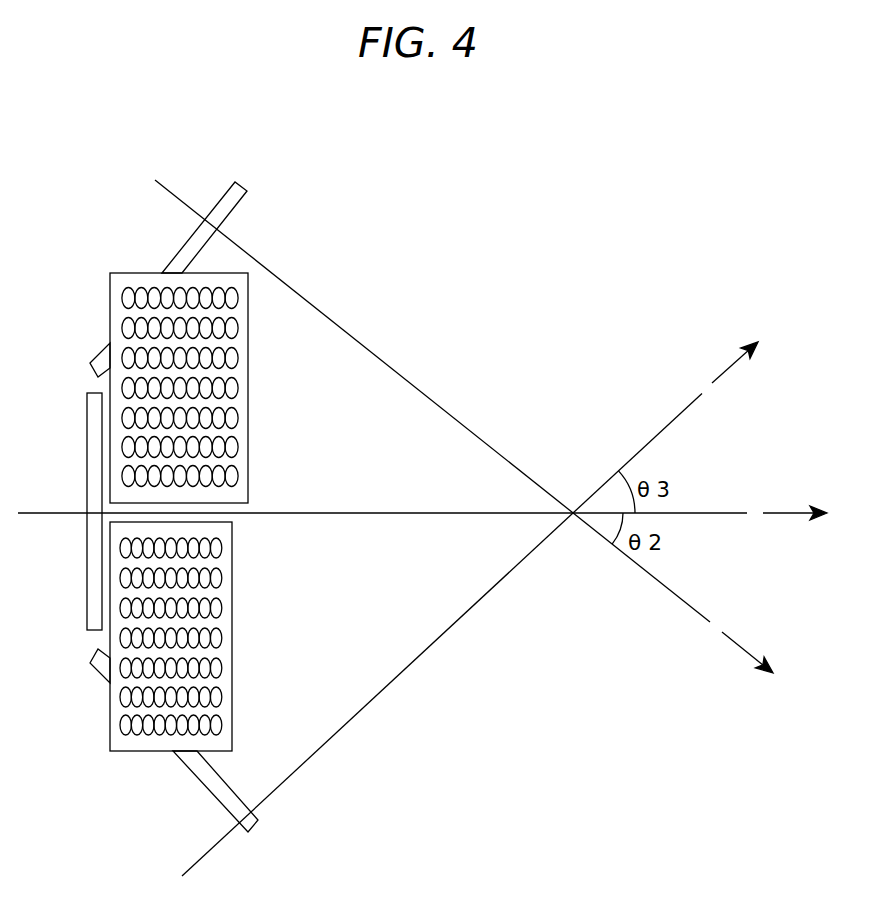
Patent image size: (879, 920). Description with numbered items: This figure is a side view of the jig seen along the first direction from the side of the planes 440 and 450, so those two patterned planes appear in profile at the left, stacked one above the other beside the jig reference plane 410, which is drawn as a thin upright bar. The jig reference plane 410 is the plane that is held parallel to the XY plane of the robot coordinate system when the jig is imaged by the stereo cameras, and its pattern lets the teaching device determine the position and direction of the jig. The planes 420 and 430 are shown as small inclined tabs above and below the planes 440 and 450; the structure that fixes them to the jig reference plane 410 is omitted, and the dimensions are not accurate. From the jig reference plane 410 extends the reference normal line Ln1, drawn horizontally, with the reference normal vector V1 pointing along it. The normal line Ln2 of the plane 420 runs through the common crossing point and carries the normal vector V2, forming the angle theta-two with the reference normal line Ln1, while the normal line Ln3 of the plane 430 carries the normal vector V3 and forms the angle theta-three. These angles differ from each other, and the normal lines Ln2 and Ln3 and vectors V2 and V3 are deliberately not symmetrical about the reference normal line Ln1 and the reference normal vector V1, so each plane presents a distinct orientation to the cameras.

The jig reference plane 410 is at (93, 393).
The plane 420 is at (243, 185).
The plane 430 is at (256, 826).
The plane 440 is at (127, 272).
The plane 450 is at (126, 752).
The reference normal line Ln1 is at (707, 513).
The normal line Ln2 is at (672, 598).
The normal line Ln3 is at (370, 703).
The reference normal vector V1 is at (782, 515).
The normal vector V2 is at (735, 645).
The normal vector V3 is at (715, 372).